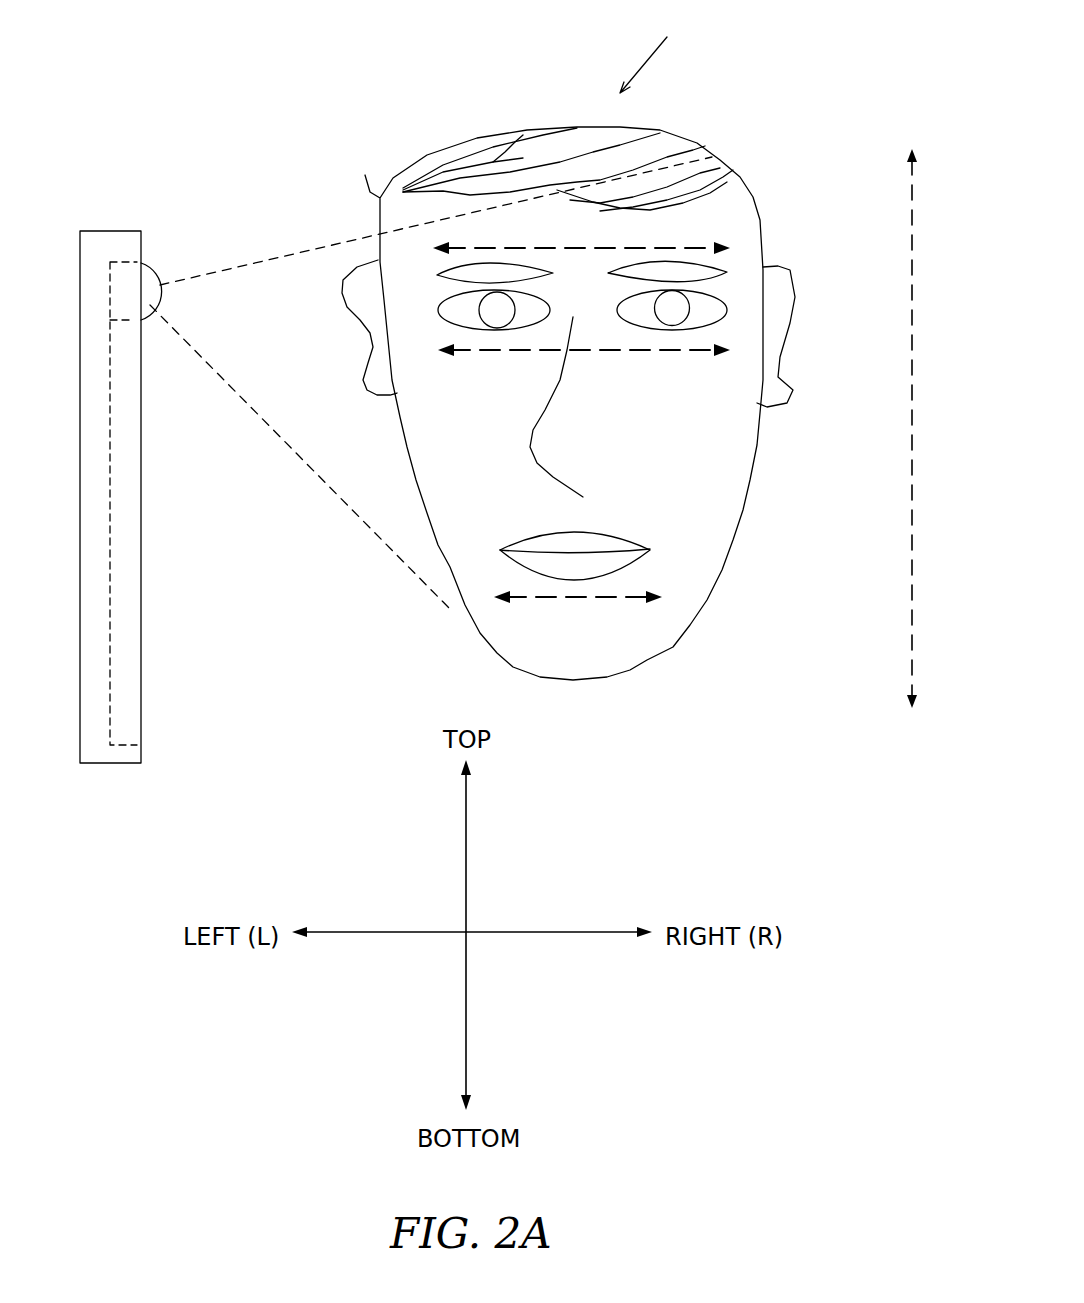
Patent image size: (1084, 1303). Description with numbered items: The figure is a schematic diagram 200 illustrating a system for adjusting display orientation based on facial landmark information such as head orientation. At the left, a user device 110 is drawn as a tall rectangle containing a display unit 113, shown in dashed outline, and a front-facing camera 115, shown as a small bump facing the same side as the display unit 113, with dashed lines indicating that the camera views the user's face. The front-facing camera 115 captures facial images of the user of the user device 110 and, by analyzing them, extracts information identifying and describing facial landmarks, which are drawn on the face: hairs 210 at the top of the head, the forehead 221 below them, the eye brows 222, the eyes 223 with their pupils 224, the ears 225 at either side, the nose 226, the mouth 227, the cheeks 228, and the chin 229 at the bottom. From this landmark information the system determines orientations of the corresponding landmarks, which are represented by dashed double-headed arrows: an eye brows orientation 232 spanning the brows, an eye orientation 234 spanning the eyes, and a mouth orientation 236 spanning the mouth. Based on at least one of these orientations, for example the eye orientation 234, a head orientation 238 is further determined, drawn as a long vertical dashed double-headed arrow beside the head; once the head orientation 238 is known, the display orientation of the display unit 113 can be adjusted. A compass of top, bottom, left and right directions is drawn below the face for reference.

The user device 110 is at (122, 228).
The display unit 113 is at (123, 660).
The front-facing camera 115 is at (158, 270).
The schematic diagram 200 is at (676, 55).
The hairs 210 is at (707, 147).
The forehead 221 is at (557, 216).
The eye brows 222 is at (692, 260).
The eyes 223 is at (725, 302).
The pupils 224 is at (497, 332).
The ears 225 is at (790, 323).
The nose 226 is at (553, 475).
The mouth 227 is at (617, 532).
The cheeks 228 is at (483, 517).
The chin 229 is at (573, 653).
The eye brows orientation 232 is at (485, 245).
The eye orientation 234 is at (527, 353).
The mouth orientation 236 is at (573, 597).
The head orientation 238 is at (910, 667).